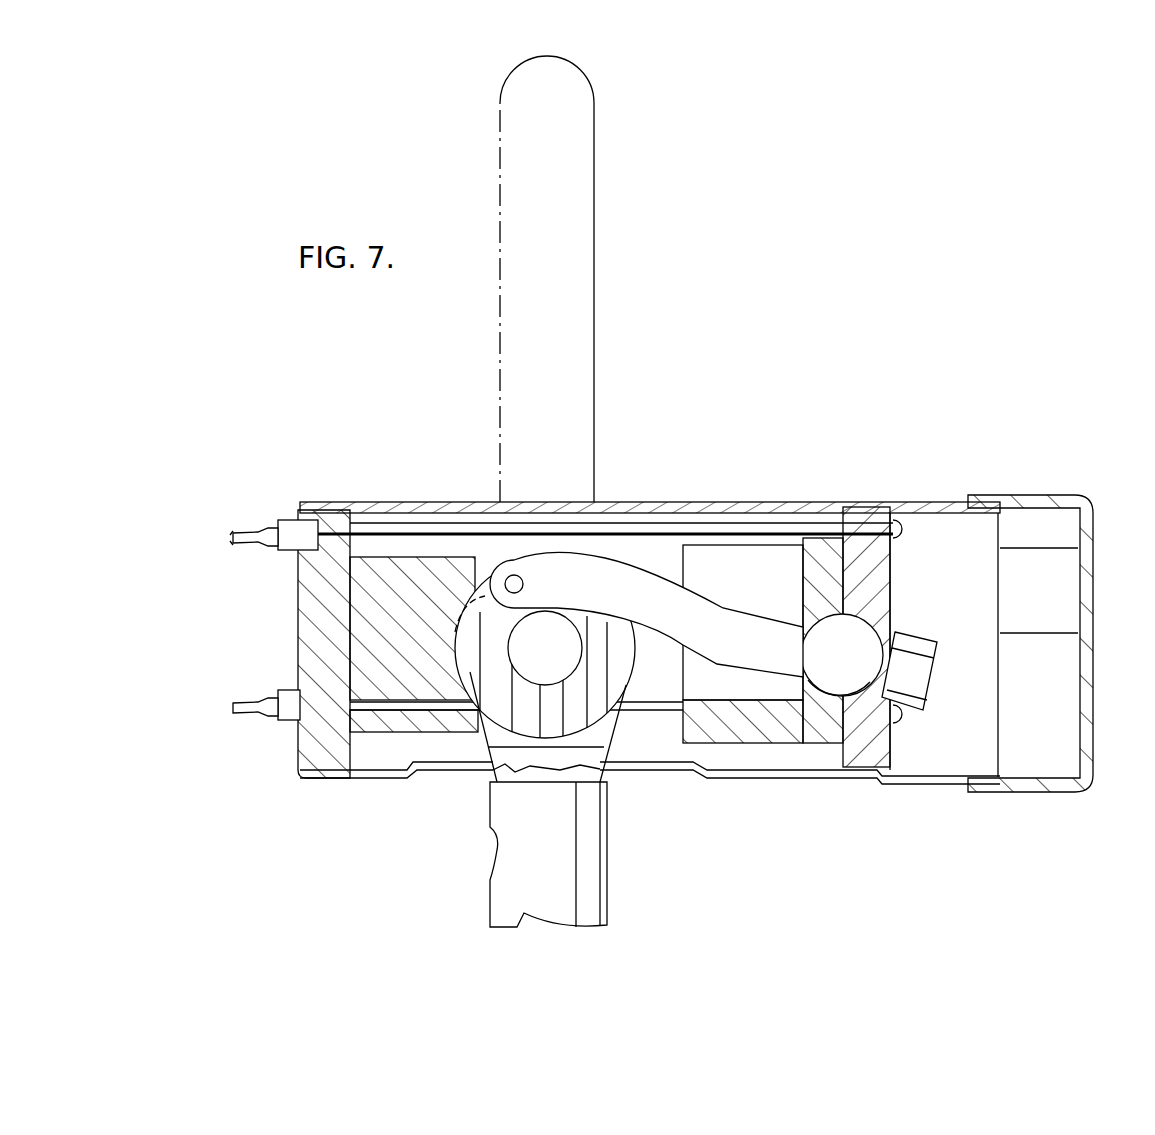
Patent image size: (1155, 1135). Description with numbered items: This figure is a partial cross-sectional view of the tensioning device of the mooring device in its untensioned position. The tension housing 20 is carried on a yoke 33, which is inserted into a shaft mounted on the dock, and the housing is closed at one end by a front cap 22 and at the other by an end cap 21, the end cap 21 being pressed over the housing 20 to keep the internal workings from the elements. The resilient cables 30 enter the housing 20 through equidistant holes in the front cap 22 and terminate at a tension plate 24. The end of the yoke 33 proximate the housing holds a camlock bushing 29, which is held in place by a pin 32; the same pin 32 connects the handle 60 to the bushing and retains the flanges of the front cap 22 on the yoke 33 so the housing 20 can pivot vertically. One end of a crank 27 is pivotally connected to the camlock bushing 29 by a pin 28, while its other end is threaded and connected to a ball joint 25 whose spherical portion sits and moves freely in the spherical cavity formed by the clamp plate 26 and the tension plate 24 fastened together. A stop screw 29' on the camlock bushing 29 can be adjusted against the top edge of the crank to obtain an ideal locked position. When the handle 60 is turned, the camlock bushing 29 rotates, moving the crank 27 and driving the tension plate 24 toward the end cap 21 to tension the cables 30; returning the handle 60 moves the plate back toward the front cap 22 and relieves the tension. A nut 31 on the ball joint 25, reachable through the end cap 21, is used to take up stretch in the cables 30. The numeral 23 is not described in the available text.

The tension housing 20 is at (863, 488).
The end cap 21 is at (1086, 489).
The front cap 22 is at (292, 633).
The bottom plate 23 is at (651, 780).
The tension plate 24 is at (893, 592).
The ball joint 25 is at (884, 618).
The clamp plate 26 is at (741, 745).
The crank 27 is at (755, 627).
The pin 28 is at (510, 575).
The camlock bushing 29 is at (412, 628).
The stop screw 29' is at (432, 531).
The cable 30 is at (337, 527).
The nut 31 is at (925, 693).
The pin 32 is at (547, 672).
The yoke 33 is at (500, 767).
The handle 60 is at (599, 146).